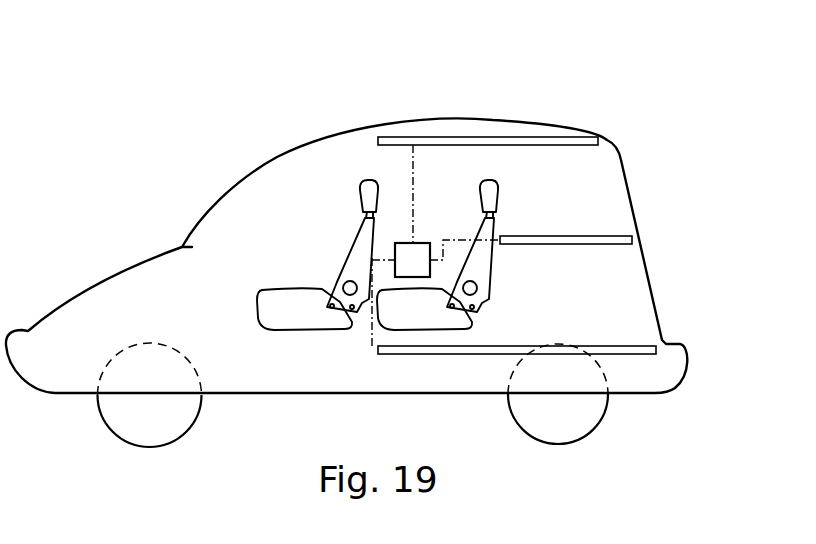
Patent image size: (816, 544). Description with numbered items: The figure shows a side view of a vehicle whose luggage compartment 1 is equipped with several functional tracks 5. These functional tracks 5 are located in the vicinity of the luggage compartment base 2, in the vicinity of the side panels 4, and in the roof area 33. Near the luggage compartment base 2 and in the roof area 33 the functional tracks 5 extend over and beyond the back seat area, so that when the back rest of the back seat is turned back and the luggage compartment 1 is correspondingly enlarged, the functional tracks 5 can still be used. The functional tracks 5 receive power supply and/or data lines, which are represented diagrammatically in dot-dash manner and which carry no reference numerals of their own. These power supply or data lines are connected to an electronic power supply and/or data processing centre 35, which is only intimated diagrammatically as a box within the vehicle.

The luggage compartment 1 is at (633, 280).
The luggage compartment base 2 is at (430, 338).
The side panels 4 is at (591, 303).
The functional tracks 5 is at (542, 146).
The roof area 33 is at (487, 131).
The electronic power supply and/or data processing centre 35 is at (422, 244).